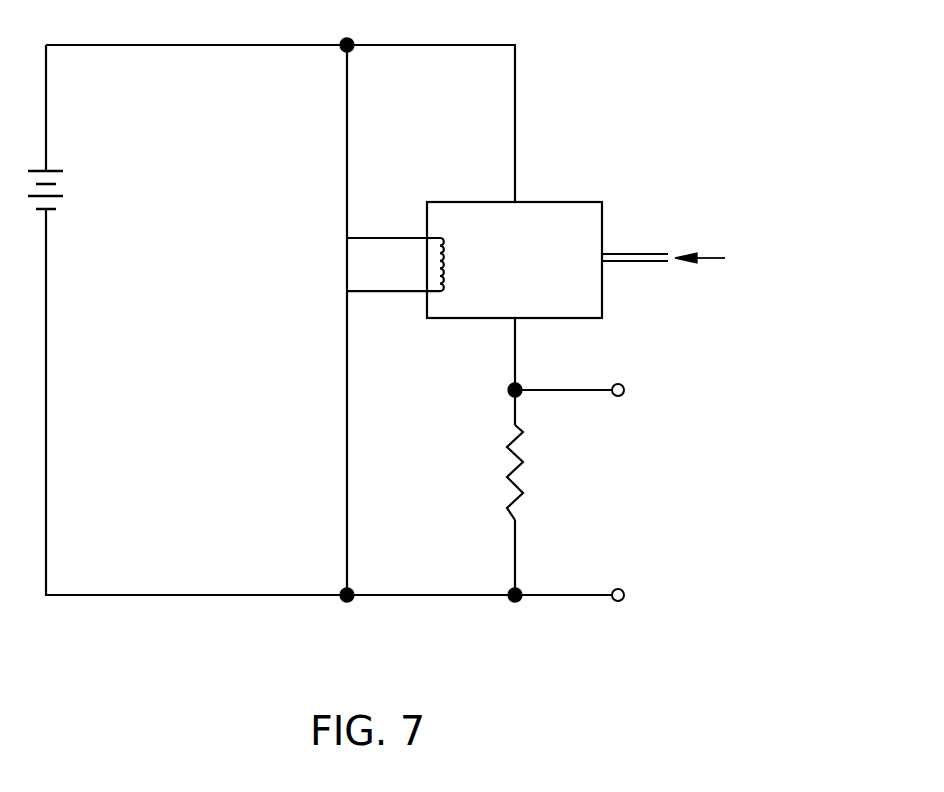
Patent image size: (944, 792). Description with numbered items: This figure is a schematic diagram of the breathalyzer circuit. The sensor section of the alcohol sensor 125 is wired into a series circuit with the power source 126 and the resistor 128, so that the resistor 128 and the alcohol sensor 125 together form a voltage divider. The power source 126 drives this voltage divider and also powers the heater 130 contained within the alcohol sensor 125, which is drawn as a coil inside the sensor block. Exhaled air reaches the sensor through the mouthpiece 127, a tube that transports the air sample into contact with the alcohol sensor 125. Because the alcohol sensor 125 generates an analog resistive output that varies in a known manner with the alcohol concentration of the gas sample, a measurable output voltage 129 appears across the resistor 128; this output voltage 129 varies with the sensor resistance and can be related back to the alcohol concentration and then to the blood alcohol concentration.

The alcohol sensor 125 is at (549, 202).
The power source 126 is at (68, 192).
The mouthpiece 127 is at (633, 262).
The resistor 128 is at (525, 452).
The output voltage 129 is at (632, 492).
The heater 130 is at (440, 263).